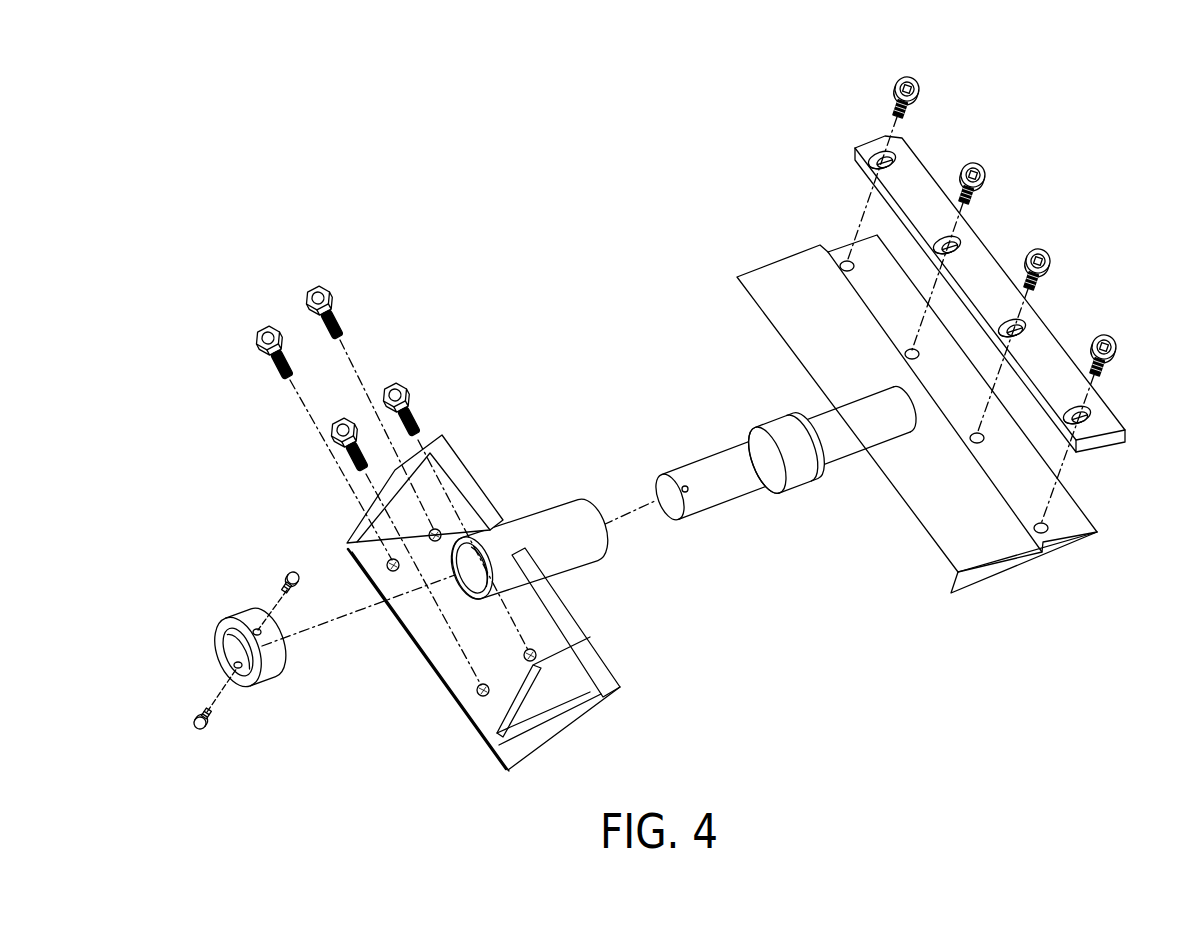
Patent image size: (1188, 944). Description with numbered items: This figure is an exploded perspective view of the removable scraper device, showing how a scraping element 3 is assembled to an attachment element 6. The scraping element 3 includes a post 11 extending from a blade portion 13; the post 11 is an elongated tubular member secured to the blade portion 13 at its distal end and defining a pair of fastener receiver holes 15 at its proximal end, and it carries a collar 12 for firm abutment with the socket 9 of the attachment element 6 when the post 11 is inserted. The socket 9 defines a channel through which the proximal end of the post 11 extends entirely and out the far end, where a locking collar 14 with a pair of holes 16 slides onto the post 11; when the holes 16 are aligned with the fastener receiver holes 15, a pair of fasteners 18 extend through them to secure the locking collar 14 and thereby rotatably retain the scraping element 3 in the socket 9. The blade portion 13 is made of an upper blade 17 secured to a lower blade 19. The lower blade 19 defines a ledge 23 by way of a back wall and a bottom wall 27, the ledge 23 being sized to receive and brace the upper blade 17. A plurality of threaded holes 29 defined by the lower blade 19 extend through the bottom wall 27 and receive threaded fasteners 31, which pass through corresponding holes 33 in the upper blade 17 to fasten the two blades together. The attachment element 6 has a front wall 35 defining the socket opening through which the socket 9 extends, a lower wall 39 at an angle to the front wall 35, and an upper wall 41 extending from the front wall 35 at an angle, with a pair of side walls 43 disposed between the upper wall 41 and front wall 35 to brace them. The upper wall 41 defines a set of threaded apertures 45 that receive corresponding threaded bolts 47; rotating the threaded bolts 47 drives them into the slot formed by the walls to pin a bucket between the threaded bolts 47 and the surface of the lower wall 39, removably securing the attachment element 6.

The scraping element 3 is at (762, 220).
The attachment element 6 is at (483, 418).
The socket 9 is at (545, 527).
The post 11 is at (747, 483).
The collar 12 is at (798, 473).
The blade portion 13 is at (893, 543).
The locking collar 14 is at (240, 634).
The fastener receiver holes 15 is at (690, 493).
The holes 16 is at (238, 665).
The upper blade 17 is at (857, 152).
The fasteners 18 is at (292, 575).
The lower blade 19 is at (765, 288).
The ledge 23 is at (1012, 463).
The bottom wall 27 is at (1108, 512).
The threaded holes 29 is at (845, 260).
The threaded fasteners 31 is at (919, 88).
The holes 33 is at (893, 156).
The front wall 35 is at (590, 652).
The lower wall 39 is at (555, 730).
The upper wall 41 is at (512, 732).
The side walls 43 is at (380, 517).
The threaded apertures 45 is at (437, 530).
The threaded bolts 47 is at (262, 340).